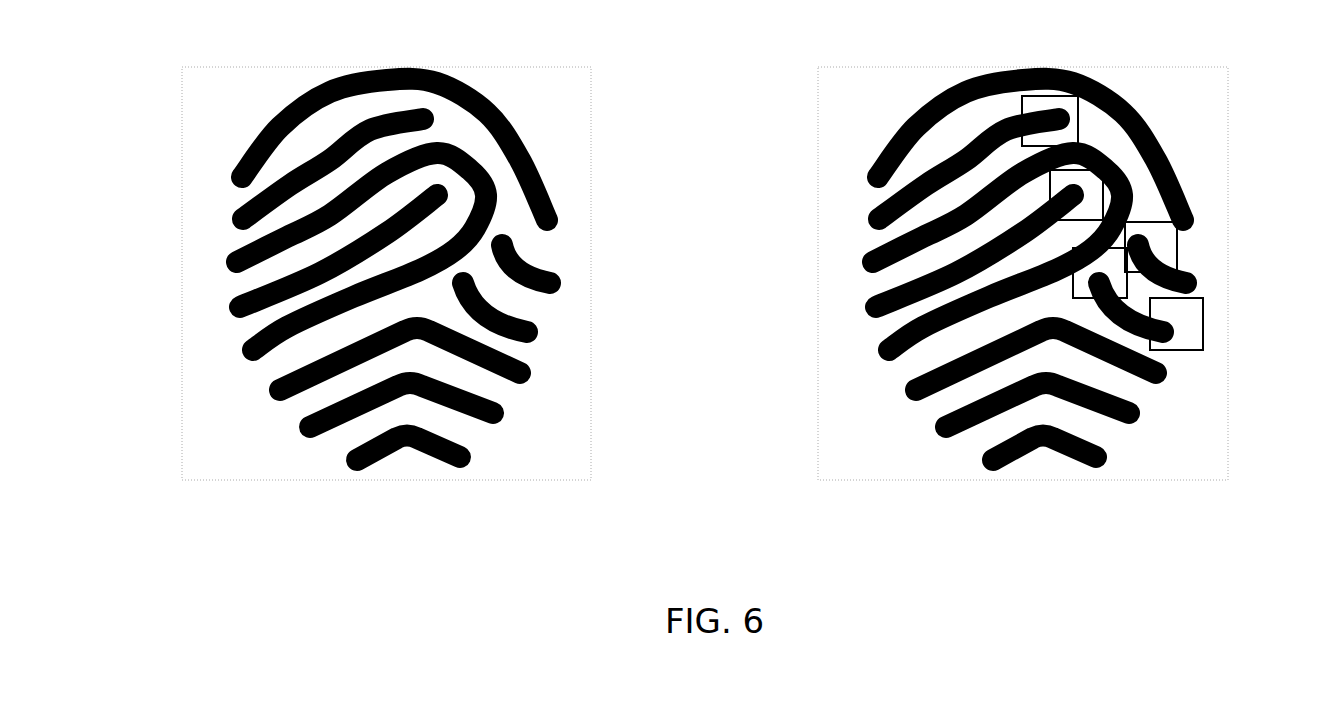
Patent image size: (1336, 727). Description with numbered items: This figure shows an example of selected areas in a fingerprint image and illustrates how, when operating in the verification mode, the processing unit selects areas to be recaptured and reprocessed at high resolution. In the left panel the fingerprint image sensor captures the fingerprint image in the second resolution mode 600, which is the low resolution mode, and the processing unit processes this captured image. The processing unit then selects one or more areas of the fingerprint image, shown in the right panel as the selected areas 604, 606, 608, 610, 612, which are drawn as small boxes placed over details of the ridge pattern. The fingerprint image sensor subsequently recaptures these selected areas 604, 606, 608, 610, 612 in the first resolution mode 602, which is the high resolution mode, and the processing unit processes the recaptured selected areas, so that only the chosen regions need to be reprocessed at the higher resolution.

The second resolution mode 600 is at (285, 68).
The first resolution mode 602 is at (903, 67).
The selected area 604 is at (1040, 105).
The selected area 606 is at (1128, 175).
The selected area 608 is at (1177, 242).
The selected area 610 is at (1100, 262).
The selected area 612 is at (1193, 333).